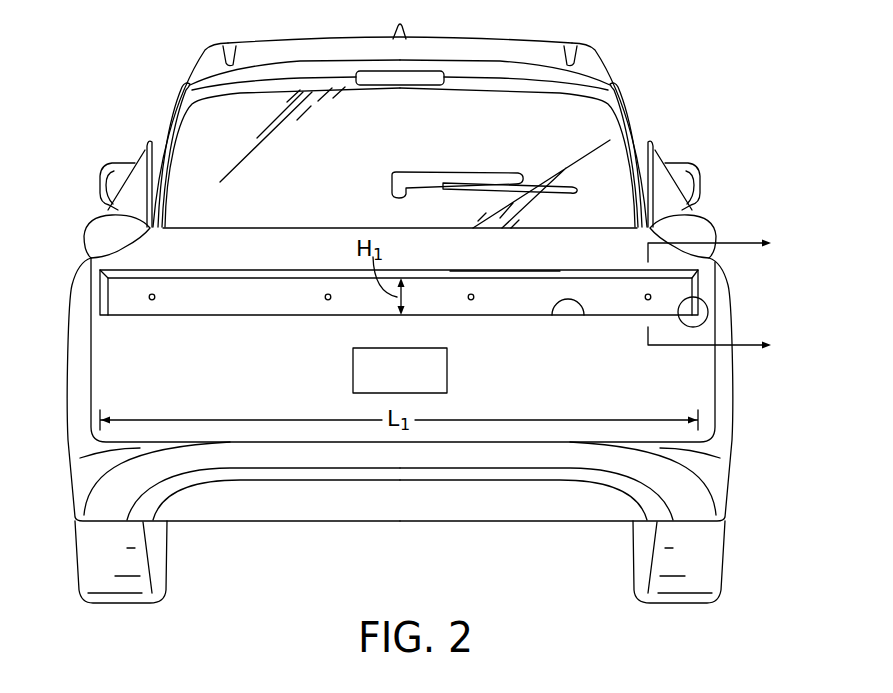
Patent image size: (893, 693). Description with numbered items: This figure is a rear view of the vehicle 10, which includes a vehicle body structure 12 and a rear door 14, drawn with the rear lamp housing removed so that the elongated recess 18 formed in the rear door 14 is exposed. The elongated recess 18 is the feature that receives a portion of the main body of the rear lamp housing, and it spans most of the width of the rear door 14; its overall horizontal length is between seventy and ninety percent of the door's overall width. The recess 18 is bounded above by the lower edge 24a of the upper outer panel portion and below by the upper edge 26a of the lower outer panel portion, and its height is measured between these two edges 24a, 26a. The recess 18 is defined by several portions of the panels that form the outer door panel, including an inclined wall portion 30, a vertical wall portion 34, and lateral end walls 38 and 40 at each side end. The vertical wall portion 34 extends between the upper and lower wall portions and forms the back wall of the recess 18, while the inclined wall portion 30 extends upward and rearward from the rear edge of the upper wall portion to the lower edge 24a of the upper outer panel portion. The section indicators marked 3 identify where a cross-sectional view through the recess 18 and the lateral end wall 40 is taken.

The vehicle 10 is at (238, 24).
The vehicle body structure 12 is at (614, 58).
The rear door 14 is at (124, 378).
The elongated recess 18 is at (267, 295).
The lower edge of the upper outer panel portion 24a is at (507, 271).
The upper edge of the lower outer panel portion 26a is at (583, 312).
The inclined wall portion 30 is at (242, 276).
The vertical wall portion 34 is at (206, 298).
The lateral end wall 38 is at (108, 298).
The lateral end wall 40 is at (700, 321).
The section line 3- 3 is at (721, 297).